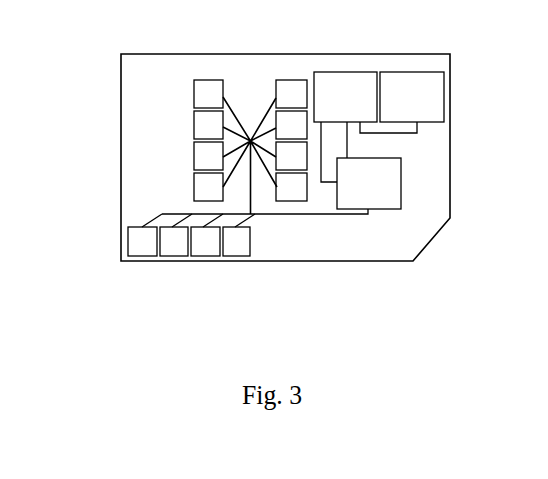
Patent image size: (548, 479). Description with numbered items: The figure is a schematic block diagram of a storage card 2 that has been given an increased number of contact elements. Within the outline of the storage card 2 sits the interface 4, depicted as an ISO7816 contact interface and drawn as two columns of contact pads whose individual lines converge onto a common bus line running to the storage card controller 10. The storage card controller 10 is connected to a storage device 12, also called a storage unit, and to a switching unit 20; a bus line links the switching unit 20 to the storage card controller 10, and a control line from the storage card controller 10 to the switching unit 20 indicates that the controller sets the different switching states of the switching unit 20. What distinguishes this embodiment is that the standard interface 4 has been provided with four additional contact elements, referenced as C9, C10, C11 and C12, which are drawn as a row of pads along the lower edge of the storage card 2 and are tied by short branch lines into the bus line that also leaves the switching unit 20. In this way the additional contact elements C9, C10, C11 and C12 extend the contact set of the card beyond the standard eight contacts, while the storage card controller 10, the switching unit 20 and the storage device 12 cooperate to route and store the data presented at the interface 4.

The storage card 2 is at (158, 63).
The interface 4 is at (307, 38).
The storage card controller 10 is at (345, 127).
The storage device 12 is at (402, 102).
The switching unit 20 is at (281, 186).
The additional contact element C9 is at (138, 242).
The additional contact element C10 is at (170, 248).
The additional contact element C11 is at (205, 248).
The additional contact element C12 is at (236, 248).